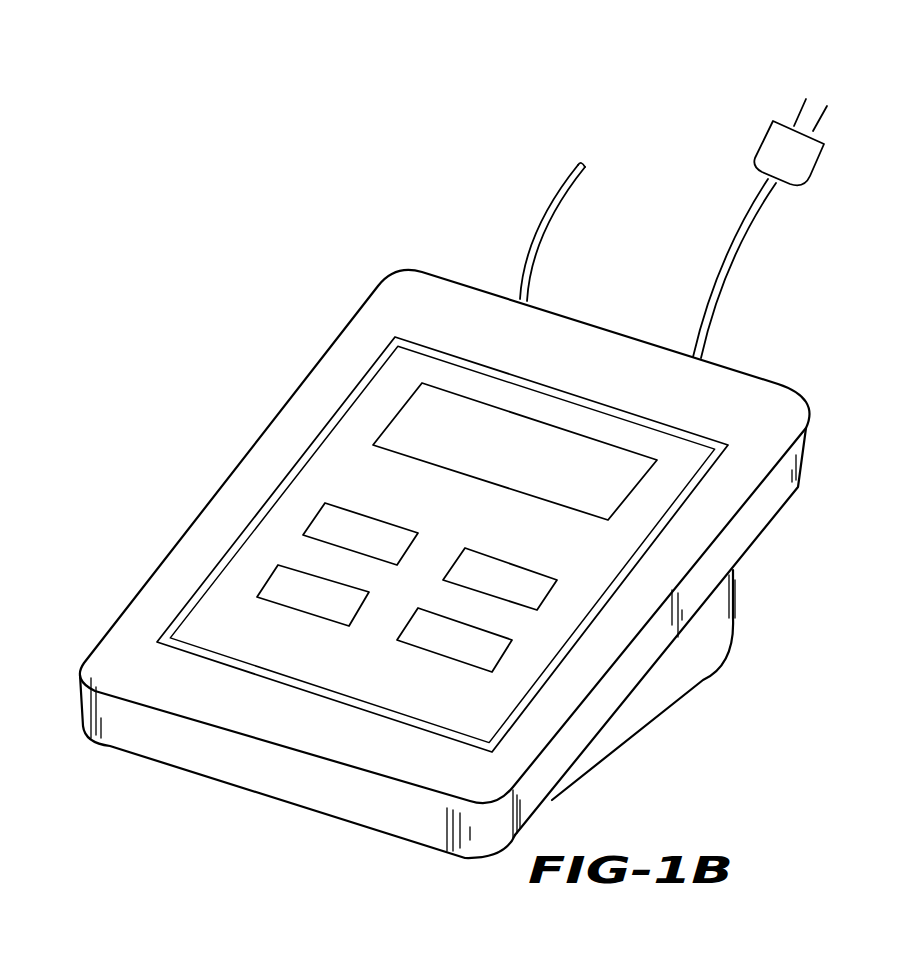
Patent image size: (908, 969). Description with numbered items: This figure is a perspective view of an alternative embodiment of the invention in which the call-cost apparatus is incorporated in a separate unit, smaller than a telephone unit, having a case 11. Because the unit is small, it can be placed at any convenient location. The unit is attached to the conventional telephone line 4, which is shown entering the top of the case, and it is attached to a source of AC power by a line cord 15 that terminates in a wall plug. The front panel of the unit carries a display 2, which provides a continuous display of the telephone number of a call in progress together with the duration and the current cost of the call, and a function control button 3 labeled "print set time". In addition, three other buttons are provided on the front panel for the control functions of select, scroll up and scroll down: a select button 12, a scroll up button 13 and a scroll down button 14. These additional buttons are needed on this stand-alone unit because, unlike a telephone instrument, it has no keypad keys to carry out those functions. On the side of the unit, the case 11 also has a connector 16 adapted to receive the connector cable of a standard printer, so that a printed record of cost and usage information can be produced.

The display 2 is at (637, 487).
The function control button 3 is at (405, 527).
The telephone line 4 is at (562, 205).
The case 11 is at (293, 390).
The select button 12 is at (367, 596).
The scroll up button 13 is at (553, 577).
The scroll down button 14 is at (510, 640).
The line cord 15 is at (745, 233).
The connector 16 is at (733, 625).